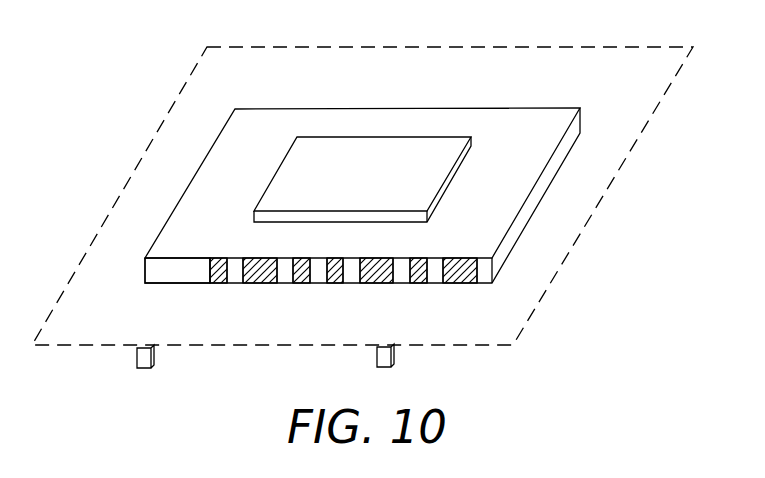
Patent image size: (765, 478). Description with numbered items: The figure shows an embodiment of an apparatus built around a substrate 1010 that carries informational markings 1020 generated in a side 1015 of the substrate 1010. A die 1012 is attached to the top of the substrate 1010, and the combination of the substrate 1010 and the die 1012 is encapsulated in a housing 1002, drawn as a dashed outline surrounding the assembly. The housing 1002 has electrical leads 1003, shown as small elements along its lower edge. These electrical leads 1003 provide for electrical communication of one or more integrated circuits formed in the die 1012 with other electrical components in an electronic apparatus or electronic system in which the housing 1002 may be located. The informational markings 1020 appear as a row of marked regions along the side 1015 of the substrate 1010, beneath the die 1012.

The housing 1002 is at (675, 46).
The substrate 1010 is at (551, 121).
The die 1012 is at (291, 175).
The side 1015 is at (152, 272).
The informational markings 1020 is at (222, 273).
The electrical leads 1003 is at (395, 357).